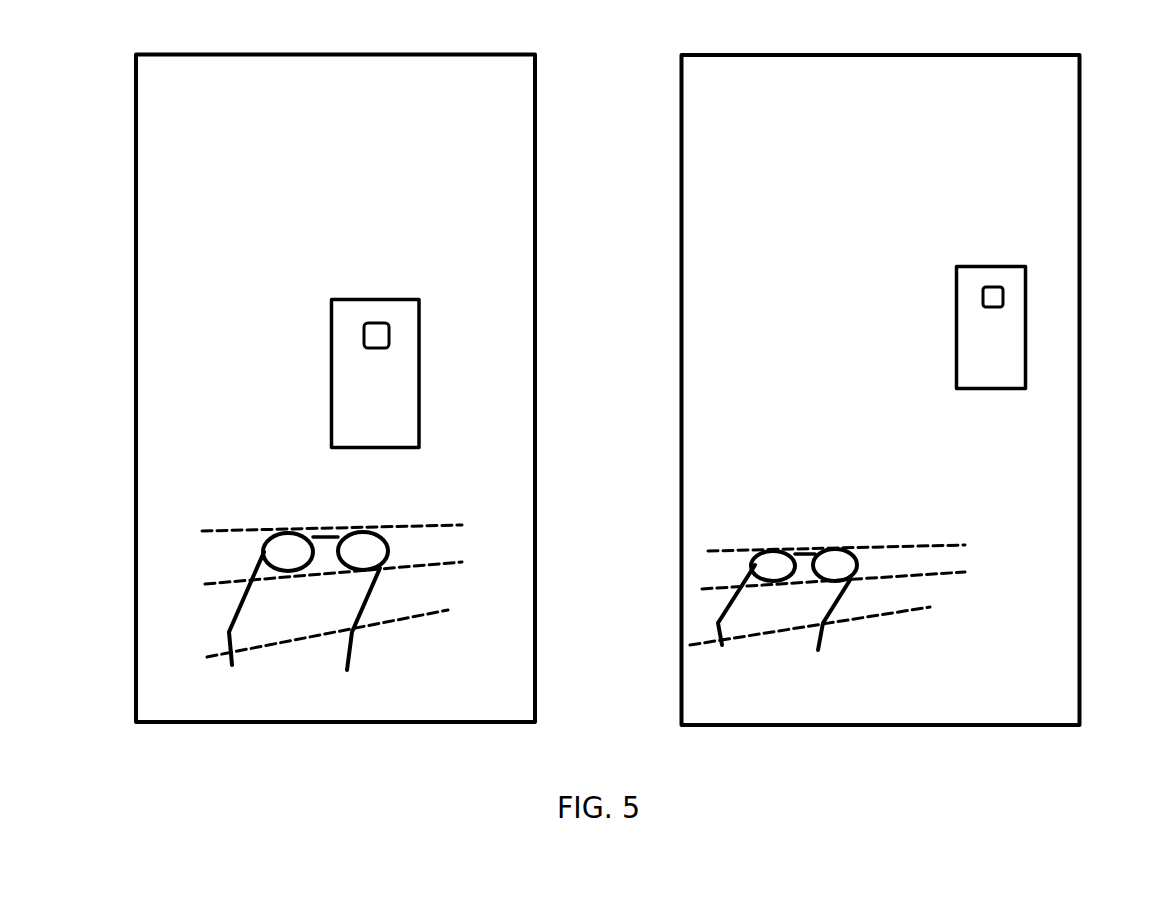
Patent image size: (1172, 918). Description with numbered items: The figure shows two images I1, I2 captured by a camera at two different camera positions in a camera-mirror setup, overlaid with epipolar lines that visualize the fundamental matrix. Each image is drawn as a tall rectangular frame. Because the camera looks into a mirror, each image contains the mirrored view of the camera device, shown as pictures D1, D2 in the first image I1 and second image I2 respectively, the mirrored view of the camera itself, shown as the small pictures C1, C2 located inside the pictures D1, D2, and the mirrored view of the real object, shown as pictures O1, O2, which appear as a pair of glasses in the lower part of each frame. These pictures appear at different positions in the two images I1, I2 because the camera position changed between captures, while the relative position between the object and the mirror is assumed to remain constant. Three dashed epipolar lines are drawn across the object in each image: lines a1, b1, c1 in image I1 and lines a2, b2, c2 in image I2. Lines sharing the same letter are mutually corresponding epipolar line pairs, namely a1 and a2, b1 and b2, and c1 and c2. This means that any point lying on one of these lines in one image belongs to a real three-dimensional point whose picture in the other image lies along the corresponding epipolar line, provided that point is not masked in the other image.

The first image I1 is at (536, 137).
The second image I2 is at (1082, 135).
The picture of mirrored camera device D1 is at (420, 418).
The picture of mirrored camera device D2 is at (955, 362).
The picture of mirrored camera C1 is at (390, 335).
The picture of mirrored camera C2 is at (983, 296).
The picture of mirrored object O1 is at (350, 650).
The picture of mirrored object O2 is at (823, 638).
The epipolar line a1 is at (327, 513).
The epipolar line b1 is at (329, 568).
The epipolar line c1 is at (319, 633).
The epipolar line a2 is at (836, 537).
The epipolar line b2 is at (843, 587).
The epipolar line c2 is at (810, 626).